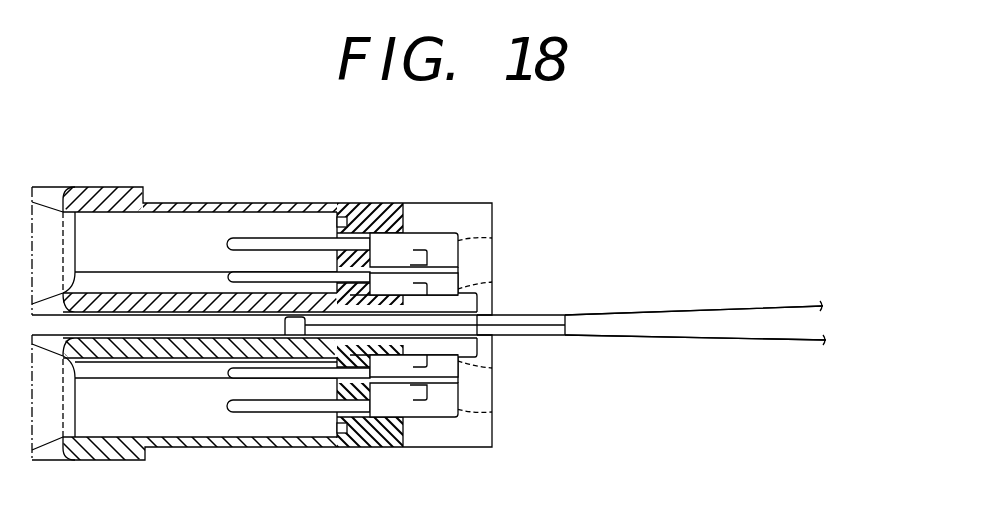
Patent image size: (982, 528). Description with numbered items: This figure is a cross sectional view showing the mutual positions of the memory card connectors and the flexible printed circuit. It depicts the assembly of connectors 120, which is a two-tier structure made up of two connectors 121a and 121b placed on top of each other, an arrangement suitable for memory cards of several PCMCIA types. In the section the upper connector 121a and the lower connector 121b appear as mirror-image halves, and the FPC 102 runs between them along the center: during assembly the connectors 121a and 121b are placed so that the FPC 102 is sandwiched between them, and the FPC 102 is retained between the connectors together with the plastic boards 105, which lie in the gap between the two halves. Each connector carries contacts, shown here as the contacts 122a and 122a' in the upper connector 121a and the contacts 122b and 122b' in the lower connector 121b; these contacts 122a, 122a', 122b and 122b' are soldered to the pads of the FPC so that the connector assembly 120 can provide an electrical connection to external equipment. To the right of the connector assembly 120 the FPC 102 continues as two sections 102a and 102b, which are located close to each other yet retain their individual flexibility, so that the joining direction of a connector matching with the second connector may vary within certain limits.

The assembly of connectors 120 is at (187, 142).
The connector 121a is at (435, 163).
The connector 121b is at (482, 457).
The contact 122a is at (416, 246).
The contact 122a' is at (420, 289).
The contact 122b is at (425, 392).
The contact 122b' is at (426, 411).
The plastic boards 105 is at (565, 337).
The FPC 102 is at (655, 225).
The section of FPC 102a is at (793, 307).
The section of FPC 102b is at (753, 338).